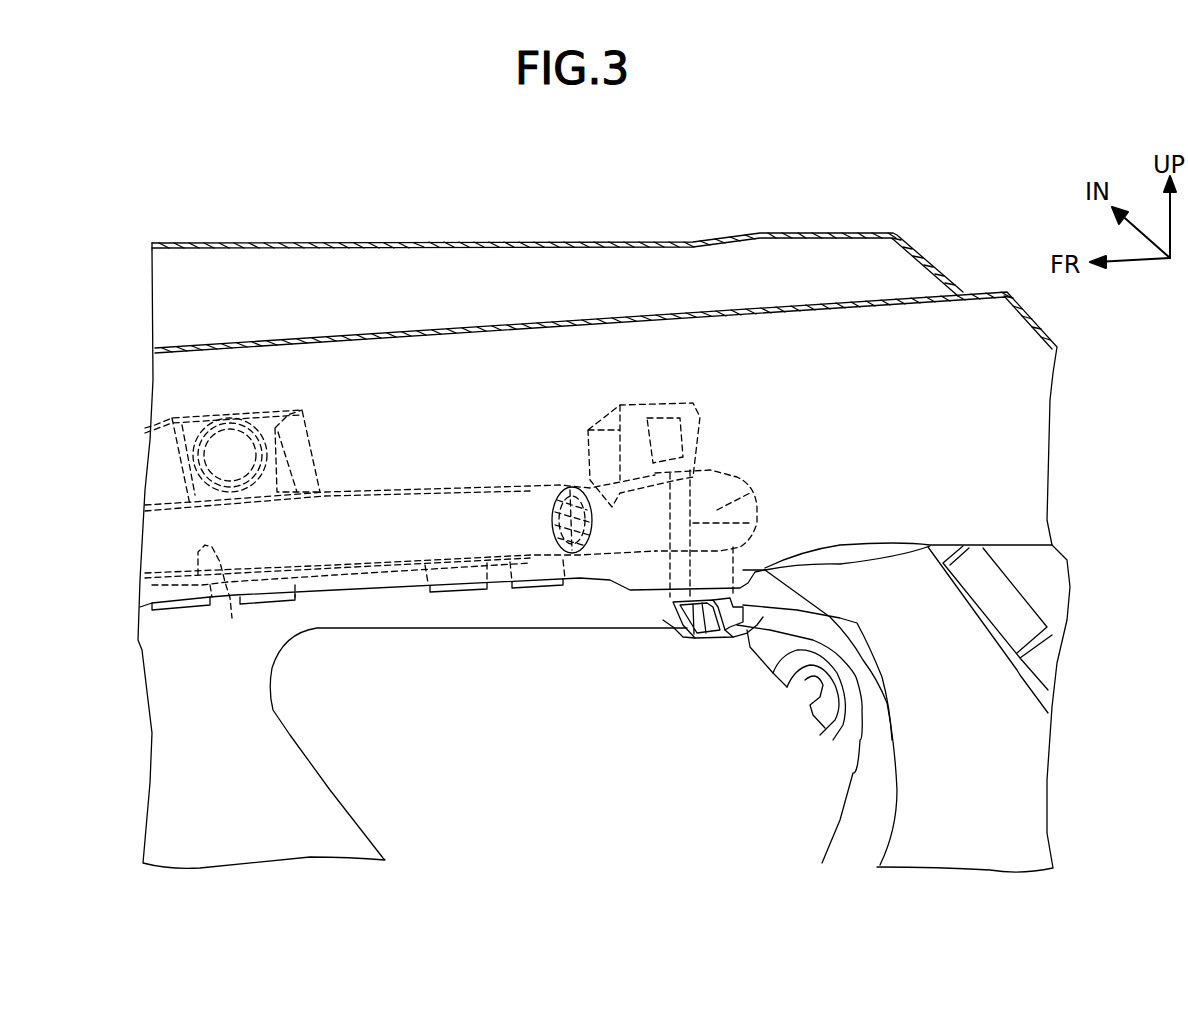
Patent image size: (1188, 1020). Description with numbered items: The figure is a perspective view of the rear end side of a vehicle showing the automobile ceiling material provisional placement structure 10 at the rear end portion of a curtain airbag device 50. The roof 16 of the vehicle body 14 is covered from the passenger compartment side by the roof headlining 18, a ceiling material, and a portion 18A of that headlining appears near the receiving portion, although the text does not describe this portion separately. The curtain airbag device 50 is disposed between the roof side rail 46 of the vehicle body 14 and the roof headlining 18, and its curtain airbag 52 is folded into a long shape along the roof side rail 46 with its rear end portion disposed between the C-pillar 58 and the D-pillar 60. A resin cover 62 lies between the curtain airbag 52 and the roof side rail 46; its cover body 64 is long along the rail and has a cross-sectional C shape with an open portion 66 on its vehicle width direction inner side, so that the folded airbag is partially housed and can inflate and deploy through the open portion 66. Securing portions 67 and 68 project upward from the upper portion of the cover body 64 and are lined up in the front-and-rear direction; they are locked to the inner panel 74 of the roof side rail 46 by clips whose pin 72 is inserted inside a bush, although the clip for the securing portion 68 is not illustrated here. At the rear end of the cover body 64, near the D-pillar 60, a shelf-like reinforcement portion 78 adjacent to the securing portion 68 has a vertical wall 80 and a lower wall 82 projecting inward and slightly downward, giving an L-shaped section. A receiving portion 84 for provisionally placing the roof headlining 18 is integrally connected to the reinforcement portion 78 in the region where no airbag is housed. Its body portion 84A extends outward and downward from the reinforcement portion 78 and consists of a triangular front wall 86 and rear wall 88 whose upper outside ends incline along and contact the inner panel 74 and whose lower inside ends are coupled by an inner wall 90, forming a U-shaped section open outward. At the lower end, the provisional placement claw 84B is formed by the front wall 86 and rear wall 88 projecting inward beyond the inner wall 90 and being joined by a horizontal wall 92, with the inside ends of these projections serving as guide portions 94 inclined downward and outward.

The automobile ceiling material provisional placement structure 10 is at (667, 750).
The vehicle body 14 is at (920, 253).
The roof 16 is at (798, 232).
The roof headlining 18 is at (742, 296).
The roof side rail flange 18A is at (770, 568).
The roof side rail 46 is at (453, 670).
The curtain airbag device 50 is at (405, 433).
The curtain airbag 52 is at (370, 540).
The C-pillar 58 is at (340, 808).
The D-pillar 60 is at (830, 823).
The resin cover 62 is at (497, 484).
The cover body 64 is at (530, 488).
The open portion 66 is at (232, 618).
The securing portion 67 is at (283, 410).
The securing portion 68 is at (640, 403).
The pin 72 is at (238, 410).
The inner panel 74 is at (443, 620).
The reinforcement portion 78 is at (723, 507).
The vertical wall 80 is at (690, 470).
The lower wall 82 is at (688, 553).
The receiving portion 84 is at (783, 553).
The body portion 84A is at (783, 547).
The provisional placement claw 84B is at (668, 632).
The front wall 86 is at (690, 638).
The rear wall 88 is at (860, 627).
The inner wall 90 is at (688, 570).
The horizontal wall 92 is at (703, 638).
The guide portion 94 is at (737, 627).